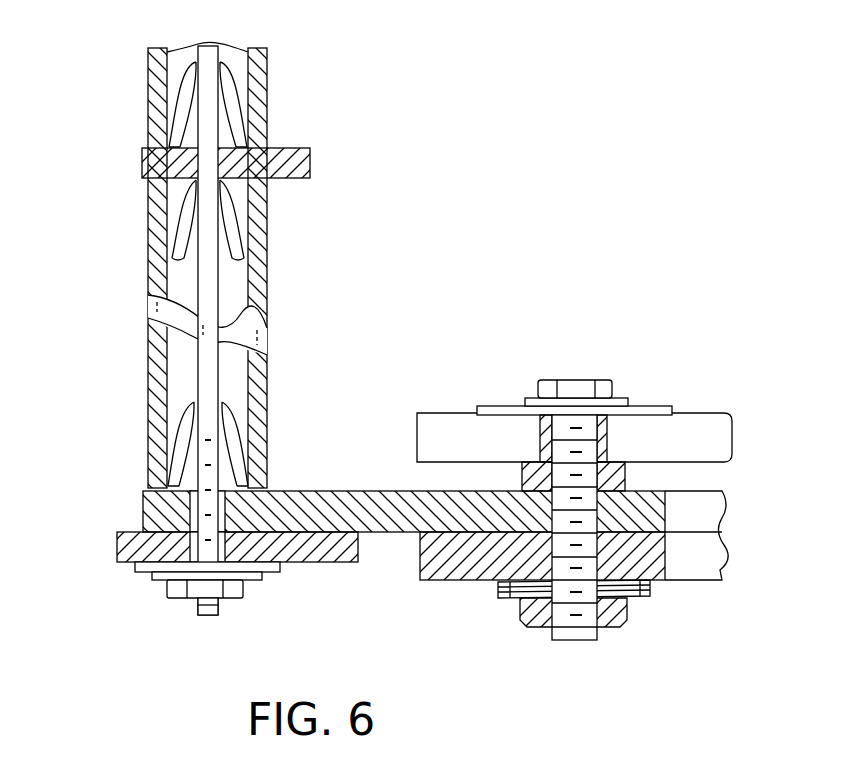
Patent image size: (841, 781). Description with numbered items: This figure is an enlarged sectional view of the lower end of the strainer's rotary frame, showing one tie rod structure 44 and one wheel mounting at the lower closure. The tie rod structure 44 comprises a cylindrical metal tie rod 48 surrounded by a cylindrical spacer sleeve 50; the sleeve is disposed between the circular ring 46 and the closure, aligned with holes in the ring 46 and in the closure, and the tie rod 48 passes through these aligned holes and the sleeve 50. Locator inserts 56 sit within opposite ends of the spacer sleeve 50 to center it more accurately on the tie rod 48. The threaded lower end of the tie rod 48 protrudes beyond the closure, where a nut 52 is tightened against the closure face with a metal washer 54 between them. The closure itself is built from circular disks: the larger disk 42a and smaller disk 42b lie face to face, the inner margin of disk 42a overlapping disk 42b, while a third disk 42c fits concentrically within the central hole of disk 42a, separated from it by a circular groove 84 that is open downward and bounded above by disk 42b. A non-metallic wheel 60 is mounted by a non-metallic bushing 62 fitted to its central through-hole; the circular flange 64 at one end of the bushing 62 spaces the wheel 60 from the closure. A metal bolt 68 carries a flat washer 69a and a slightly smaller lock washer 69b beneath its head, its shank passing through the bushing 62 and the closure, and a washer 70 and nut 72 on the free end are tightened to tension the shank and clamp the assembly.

The circular disk 42a is at (117, 548).
The circular disk 42b is at (143, 512).
The third disk 42c is at (440, 580).
The tie rod structure 44 is at (190, 265).
The circular ring 46 is at (310, 162).
The tie rod 48 is at (212, 42).
The spacer sleeve 50 is at (148, 100).
The nut 52 is at (243, 592).
The metal washer 54 is at (276, 570).
The locator insert 56 is at (230, 95).
The wheel 60 is at (710, 437).
The bushing 62 is at (625, 474).
The circular flange 64 is at (522, 478).
The bolt 68 is at (585, 380).
The flat washer 69a is at (673, 405).
The lock washer 69b is at (627, 400).
The washer 70 is at (650, 590).
The nut 72 is at (615, 628).
The circular groove 84 is at (378, 565).